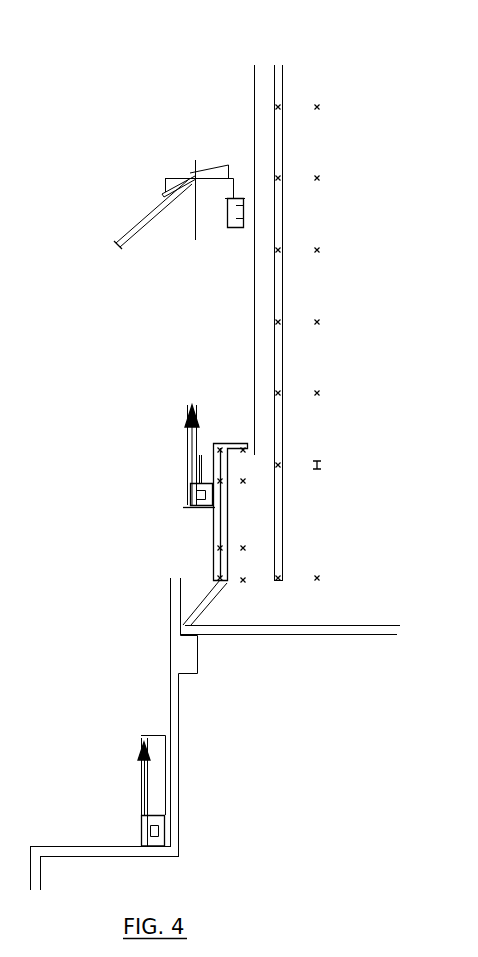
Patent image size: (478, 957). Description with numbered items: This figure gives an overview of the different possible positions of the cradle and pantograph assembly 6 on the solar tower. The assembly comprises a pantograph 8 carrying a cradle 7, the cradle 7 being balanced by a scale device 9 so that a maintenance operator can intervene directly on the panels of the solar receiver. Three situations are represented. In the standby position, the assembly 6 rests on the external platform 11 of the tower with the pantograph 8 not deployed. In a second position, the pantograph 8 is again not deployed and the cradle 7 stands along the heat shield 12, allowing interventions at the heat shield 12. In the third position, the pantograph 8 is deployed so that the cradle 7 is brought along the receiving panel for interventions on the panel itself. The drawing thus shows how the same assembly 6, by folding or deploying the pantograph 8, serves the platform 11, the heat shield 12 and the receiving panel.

The cradle and pantograph assembly 6 is at (158, 168).
The cradle 7 is at (243, 218).
The pantograph 8 is at (192, 187).
The scale device 9 is at (107, 239).
The platform 11 is at (72, 840).
The heat shield 12 is at (216, 533).